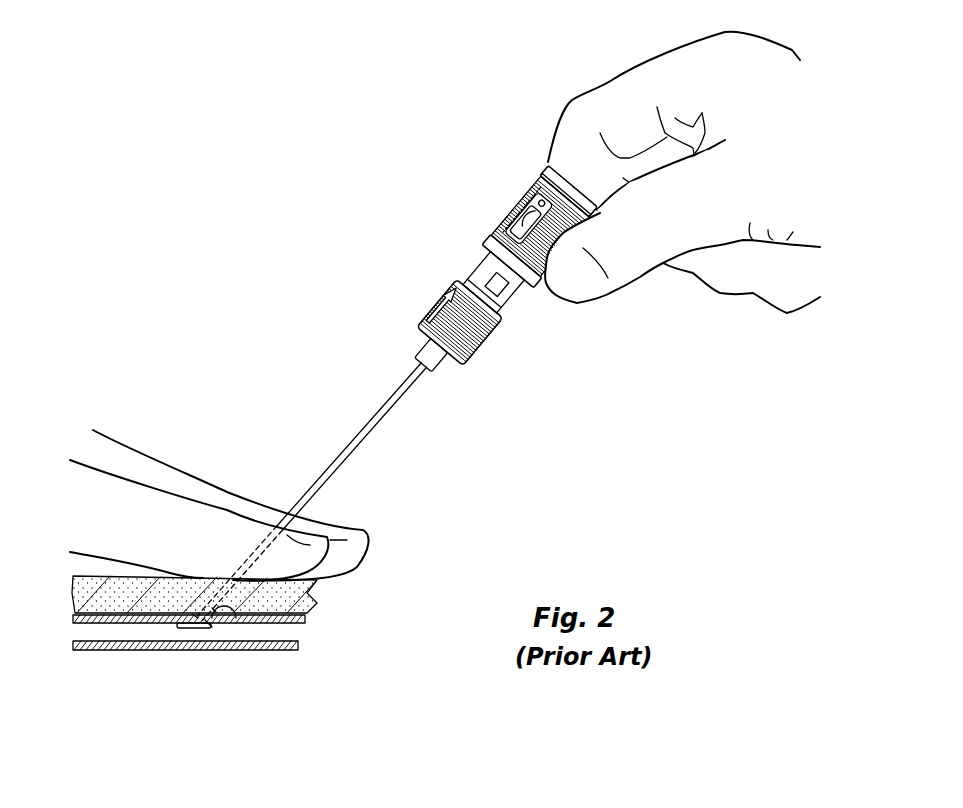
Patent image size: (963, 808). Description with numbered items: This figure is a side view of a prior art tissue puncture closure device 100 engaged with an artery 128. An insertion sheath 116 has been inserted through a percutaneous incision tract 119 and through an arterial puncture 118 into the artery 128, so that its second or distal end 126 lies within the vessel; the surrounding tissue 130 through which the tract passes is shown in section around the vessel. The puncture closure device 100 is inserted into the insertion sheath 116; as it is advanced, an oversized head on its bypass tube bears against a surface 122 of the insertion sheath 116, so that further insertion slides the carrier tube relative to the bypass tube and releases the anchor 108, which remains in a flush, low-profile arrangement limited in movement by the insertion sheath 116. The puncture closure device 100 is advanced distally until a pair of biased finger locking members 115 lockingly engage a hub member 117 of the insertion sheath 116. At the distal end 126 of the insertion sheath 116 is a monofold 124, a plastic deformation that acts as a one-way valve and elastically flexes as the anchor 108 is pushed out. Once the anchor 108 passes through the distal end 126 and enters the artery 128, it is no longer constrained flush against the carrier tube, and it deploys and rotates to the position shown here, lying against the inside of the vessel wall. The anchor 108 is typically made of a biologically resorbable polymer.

The puncture closure device 100 is at (454, 367).
The anchor 108 is at (190, 628).
The biased finger locking members 115 is at (472, 275).
The insertion sheath 116 is at (396, 407).
The hub member 117 is at (437, 306).
The arterial puncture 118 is at (192, 614).
The percutaneous incision tract 119 is at (212, 608).
The surface of insertion sheath 122 is at (545, 292).
The monofold 124 is at (213, 628).
The distal end of insertion sheath 126 is at (236, 616).
The artery 128 is at (305, 620).
The skin 130 is at (292, 597).